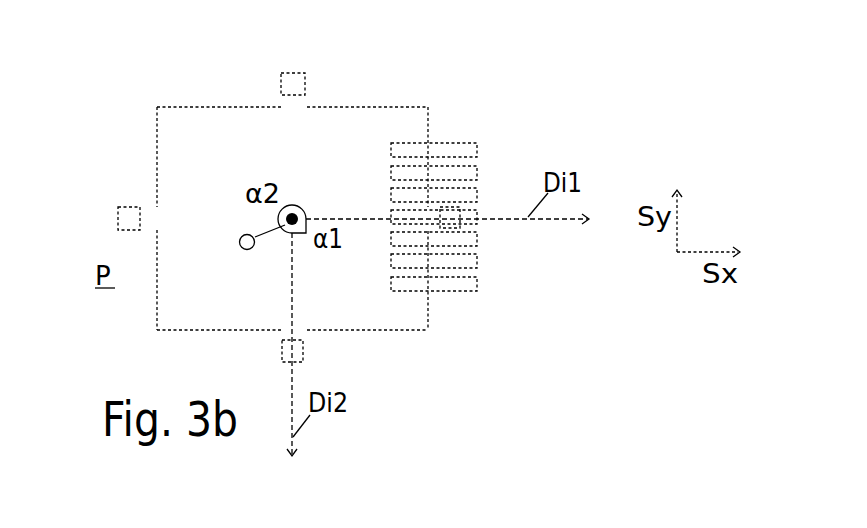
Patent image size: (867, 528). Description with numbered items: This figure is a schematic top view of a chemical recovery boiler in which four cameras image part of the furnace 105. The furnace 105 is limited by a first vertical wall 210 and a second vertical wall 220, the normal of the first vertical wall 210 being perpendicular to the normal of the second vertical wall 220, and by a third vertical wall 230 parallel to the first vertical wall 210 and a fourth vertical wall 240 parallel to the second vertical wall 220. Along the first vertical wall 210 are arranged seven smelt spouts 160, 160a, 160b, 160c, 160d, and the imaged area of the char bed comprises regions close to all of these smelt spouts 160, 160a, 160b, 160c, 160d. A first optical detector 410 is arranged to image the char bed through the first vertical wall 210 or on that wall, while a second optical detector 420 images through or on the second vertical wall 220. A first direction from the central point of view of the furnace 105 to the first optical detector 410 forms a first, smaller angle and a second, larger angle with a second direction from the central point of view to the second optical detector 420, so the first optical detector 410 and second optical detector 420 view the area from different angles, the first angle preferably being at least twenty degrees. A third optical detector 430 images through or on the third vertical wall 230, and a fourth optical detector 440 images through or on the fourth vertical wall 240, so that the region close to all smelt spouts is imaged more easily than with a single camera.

The furnace 105 is at (358, 167).
The smelt spouts 160 is at (479, 225).
The smelt spout 160a is at (477, 262).
The smelt spout 160b is at (477, 240).
The smelt spout 160c is at (477, 173).
The smelt spout 160d is at (477, 150).
The first vertical wall 210 is at (428, 113).
The second vertical wall 220 is at (398, 331).
The third vertical wall 230 is at (154, 174).
The fourth vertical wall 240 is at (210, 106).
The first optical detector 410 is at (450, 217).
The second optical detector 420 is at (287, 353).
The third optical detector 430 is at (118, 218).
The fourth optical detector 440 is at (282, 77).